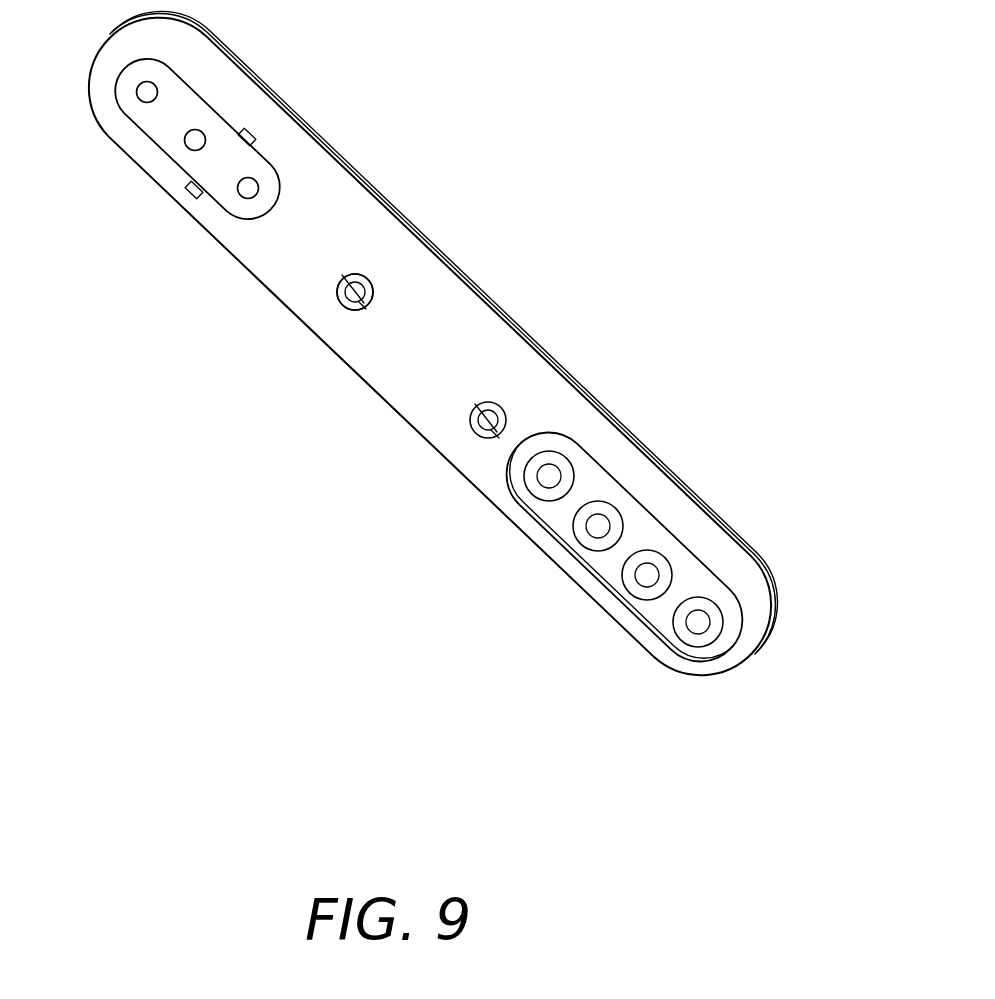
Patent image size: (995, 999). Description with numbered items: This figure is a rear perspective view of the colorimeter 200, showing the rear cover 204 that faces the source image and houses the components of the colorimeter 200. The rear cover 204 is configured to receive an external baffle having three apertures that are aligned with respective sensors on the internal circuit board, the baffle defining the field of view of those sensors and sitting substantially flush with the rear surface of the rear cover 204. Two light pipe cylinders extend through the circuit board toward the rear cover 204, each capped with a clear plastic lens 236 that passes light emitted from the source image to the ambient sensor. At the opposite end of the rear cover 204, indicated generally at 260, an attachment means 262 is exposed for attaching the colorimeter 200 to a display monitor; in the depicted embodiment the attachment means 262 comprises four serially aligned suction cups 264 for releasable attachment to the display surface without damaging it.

The colorimeter 200 is at (175, 485).
The rear cover 204 is at (345, 259).
The clear plastic lens 236 is at (477, 425).
The opposite end of the rear cover 260 is at (777, 647).
The attachment means 262 is at (607, 560).
The suction cups 264 is at (647, 575).